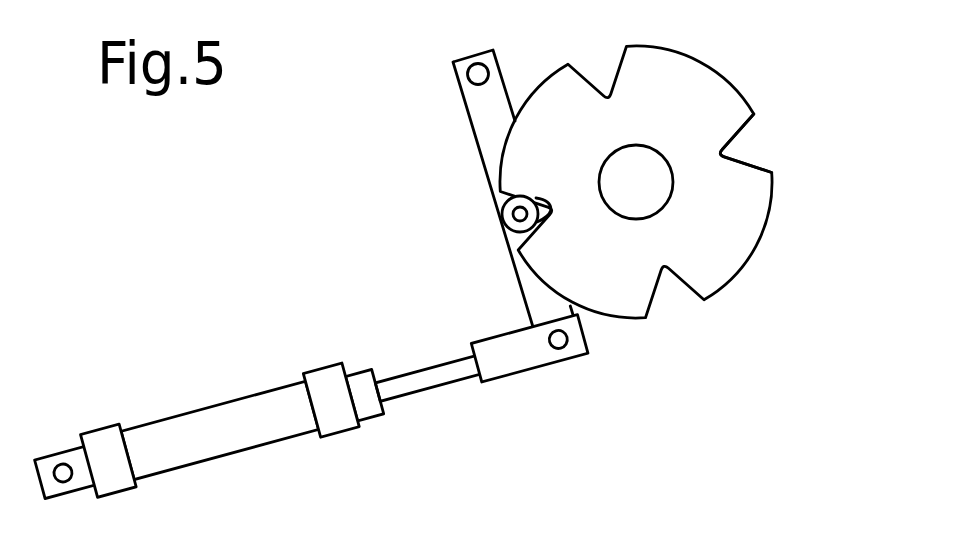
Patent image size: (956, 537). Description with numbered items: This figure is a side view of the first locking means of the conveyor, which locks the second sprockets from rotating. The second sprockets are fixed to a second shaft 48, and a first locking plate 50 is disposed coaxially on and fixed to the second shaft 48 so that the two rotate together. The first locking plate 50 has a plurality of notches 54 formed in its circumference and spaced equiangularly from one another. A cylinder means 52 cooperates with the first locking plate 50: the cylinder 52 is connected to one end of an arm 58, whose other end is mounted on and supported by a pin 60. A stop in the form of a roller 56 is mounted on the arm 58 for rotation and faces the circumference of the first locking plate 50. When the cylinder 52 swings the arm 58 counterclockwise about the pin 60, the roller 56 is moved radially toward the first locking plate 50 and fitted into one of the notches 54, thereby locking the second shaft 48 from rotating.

The second shaft 48 is at (638, 160).
The first locking plate 50 is at (735, 242).
The cylinder means 52 is at (192, 423).
The notches 54 is at (738, 152).
The roller 56 is at (503, 220).
The arm 58 is at (481, 139).
The pin 60 is at (468, 77).